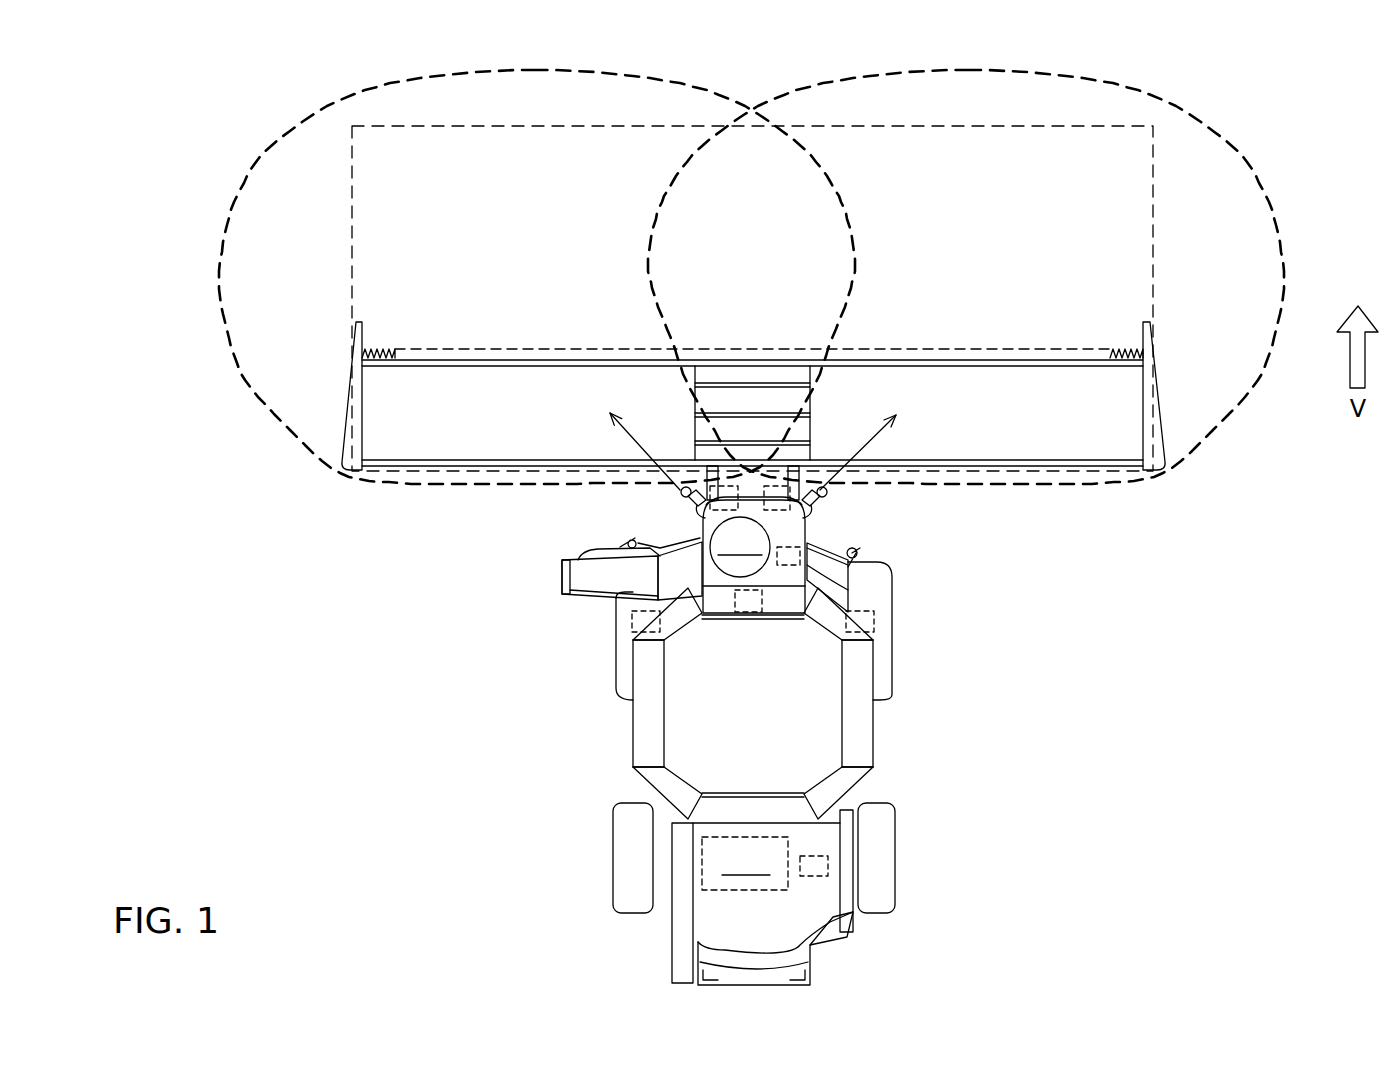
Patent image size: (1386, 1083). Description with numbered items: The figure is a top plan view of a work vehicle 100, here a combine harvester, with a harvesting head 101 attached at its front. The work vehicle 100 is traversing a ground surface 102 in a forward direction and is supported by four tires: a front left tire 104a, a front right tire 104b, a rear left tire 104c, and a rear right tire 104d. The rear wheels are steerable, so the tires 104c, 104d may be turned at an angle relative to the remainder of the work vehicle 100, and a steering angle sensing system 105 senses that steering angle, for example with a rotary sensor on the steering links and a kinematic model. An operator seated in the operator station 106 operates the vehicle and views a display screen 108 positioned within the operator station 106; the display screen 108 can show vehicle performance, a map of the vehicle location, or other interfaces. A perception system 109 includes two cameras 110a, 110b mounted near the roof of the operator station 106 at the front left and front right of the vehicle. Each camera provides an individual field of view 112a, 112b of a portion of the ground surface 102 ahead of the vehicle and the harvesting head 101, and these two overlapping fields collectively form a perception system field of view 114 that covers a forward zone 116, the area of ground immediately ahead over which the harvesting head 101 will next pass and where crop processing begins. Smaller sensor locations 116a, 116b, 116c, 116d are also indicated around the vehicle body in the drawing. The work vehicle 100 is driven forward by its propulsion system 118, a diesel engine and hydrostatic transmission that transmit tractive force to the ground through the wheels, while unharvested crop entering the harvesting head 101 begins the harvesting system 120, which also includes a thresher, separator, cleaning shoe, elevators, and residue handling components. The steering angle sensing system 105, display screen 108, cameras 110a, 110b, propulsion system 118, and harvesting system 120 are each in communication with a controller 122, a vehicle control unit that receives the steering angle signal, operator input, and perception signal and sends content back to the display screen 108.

The work vehicle 100 is at (215, 122).
The harvesting head 101 is at (392, 478).
The ground surface 102 is at (418, 790).
The front left tire 104a is at (617, 633).
The front right tire 104b is at (883, 633).
The rear left tire 104c is at (612, 888).
The rear right tire 104d is at (896, 888).
The steering angle sensing system 105 is at (823, 878).
The operator station 106 is at (860, 590).
The display screen 108 is at (820, 555).
The perception system 109 is at (803, 475).
The camera 110a is at (683, 510).
The camera 110b is at (830, 507).
The individual field of view 112a is at (520, 72).
The individual field of view 112b is at (958, 72).
The perception system field of view 114 is at (752, 245).
The forward zone 116 is at (345, 268).
The first sensor 116a is at (700, 462).
The second sensor 116b is at (790, 463).
The third sensor 116c is at (655, 640).
The fourth sensor 116d is at (850, 640).
The propulsion system 118 is at (745, 703).
The harvesting system 120 is at (525, 335).
The controller 122 is at (760, 615).